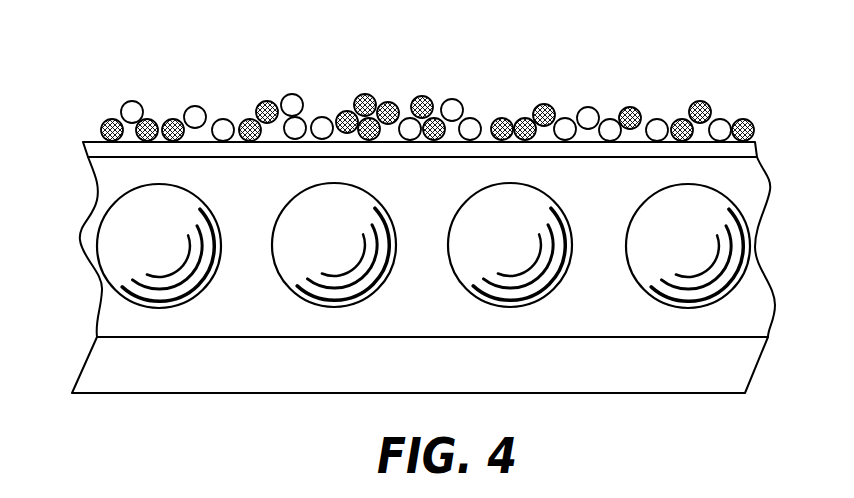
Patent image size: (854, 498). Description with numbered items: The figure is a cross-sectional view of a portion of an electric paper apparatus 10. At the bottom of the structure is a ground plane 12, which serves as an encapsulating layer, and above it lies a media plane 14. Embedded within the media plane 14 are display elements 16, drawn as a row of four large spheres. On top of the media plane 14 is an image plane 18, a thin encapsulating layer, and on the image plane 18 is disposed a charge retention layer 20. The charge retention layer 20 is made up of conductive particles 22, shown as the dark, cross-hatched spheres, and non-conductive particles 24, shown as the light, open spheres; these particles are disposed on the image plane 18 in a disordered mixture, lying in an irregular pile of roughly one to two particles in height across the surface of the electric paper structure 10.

The electric paper apparatus 10 is at (668, 50).
The ground plane 12 is at (88, 367).
The media plane 14 is at (112, 316).
The display elements 16 is at (107, 218).
The image plane 18 is at (86, 149).
The charge retention layer 20 is at (463, 97).
The conductive particles 22 is at (417, 97).
The non-conductive particles 24 is at (467, 127).